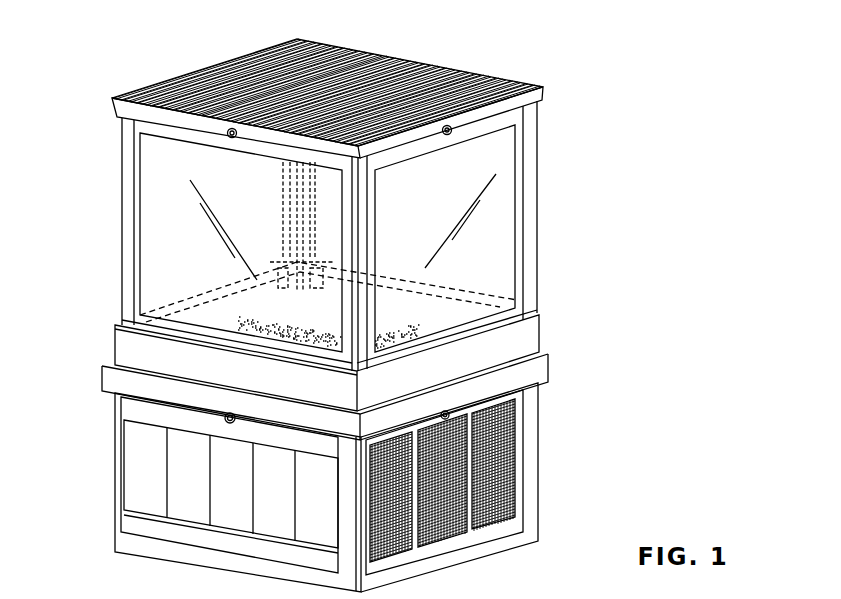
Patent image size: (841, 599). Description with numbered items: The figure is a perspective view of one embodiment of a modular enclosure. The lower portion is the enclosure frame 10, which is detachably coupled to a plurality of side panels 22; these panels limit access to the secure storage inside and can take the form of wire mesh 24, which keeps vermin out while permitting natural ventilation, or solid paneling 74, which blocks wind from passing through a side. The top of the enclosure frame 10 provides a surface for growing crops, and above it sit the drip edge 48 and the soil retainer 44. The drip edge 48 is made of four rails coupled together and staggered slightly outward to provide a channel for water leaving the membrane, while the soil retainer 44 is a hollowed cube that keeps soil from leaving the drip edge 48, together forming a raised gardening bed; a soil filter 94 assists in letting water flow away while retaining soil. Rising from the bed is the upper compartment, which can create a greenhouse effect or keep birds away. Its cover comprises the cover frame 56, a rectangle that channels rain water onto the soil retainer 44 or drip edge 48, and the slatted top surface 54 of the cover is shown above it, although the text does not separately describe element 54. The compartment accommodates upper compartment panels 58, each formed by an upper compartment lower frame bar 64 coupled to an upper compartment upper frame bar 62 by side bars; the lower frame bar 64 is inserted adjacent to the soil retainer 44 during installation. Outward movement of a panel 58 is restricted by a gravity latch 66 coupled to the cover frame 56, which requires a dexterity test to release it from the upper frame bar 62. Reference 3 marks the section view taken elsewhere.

The section line indicator for FIG. 3 is at (102, 346).
The enclosure frame 10 is at (117, 478).
The side panels 22 is at (527, 478).
The wire mesh 24 is at (447, 527).
The soil retainer 44 is at (118, 336).
The drip edge 48 is at (552, 360).
The slatted roof 54 is at (384, 55).
The cover frame 56 is at (135, 108).
The upper compartment panel 58 is at (120, 222).
The upper compartment upper frame bar 62 is at (158, 134).
The upper compartment lower frame bar 64 is at (267, 345).
The gravity latch 66 is at (245, 405).
The solid paneling 74 is at (230, 528).
The soil filter 94 is at (280, 311).